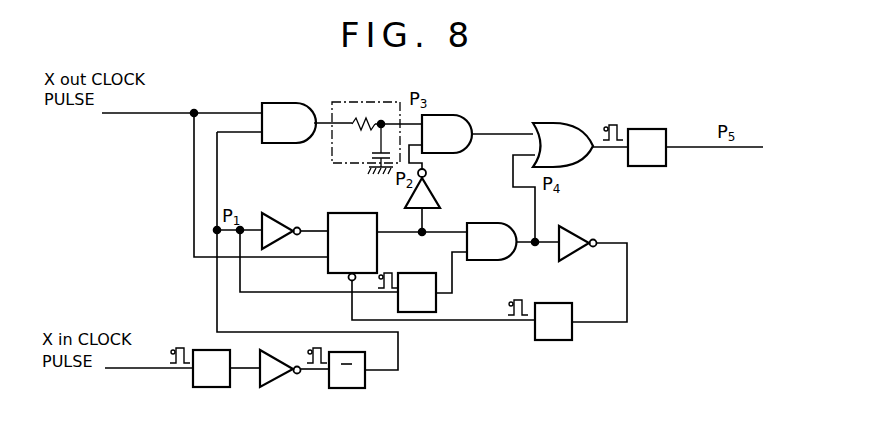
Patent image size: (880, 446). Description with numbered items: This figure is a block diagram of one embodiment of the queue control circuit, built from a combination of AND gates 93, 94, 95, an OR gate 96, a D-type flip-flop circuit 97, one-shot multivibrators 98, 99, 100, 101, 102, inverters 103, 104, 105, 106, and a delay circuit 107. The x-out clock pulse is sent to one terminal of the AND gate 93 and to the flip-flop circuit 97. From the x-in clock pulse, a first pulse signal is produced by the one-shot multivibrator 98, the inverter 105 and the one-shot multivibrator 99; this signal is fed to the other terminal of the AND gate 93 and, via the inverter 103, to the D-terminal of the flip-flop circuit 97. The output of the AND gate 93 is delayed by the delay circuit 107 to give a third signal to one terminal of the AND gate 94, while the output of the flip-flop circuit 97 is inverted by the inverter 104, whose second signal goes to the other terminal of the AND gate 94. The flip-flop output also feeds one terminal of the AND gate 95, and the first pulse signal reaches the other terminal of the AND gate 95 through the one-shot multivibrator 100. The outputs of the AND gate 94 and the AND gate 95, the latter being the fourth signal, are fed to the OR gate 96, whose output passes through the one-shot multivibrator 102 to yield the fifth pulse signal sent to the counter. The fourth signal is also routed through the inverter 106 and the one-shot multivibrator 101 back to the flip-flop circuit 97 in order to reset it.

The AND gate 93 is at (296, 103).
The AND gate 94 is at (483, 108).
The AND gate 95 is at (500, 268).
The OR gate 96 is at (560, 123).
The D-type flip-flop circuit 97 is at (352, 213).
The one-shot multivibrator 98 is at (222, 387).
The one-shot multivibrator 99 is at (365, 388).
The one-shot multivibrator 100 is at (416, 273).
The one-shot multivibrator 101 is at (552, 340).
The one-shot multivibrator 102 is at (640, 166).
The inverter 103 is at (278, 211).
The inverter 104 is at (434, 194).
The inverter 105 is at (285, 385).
The inverter 106 is at (575, 229).
The delay circuit 107 is at (386, 101).